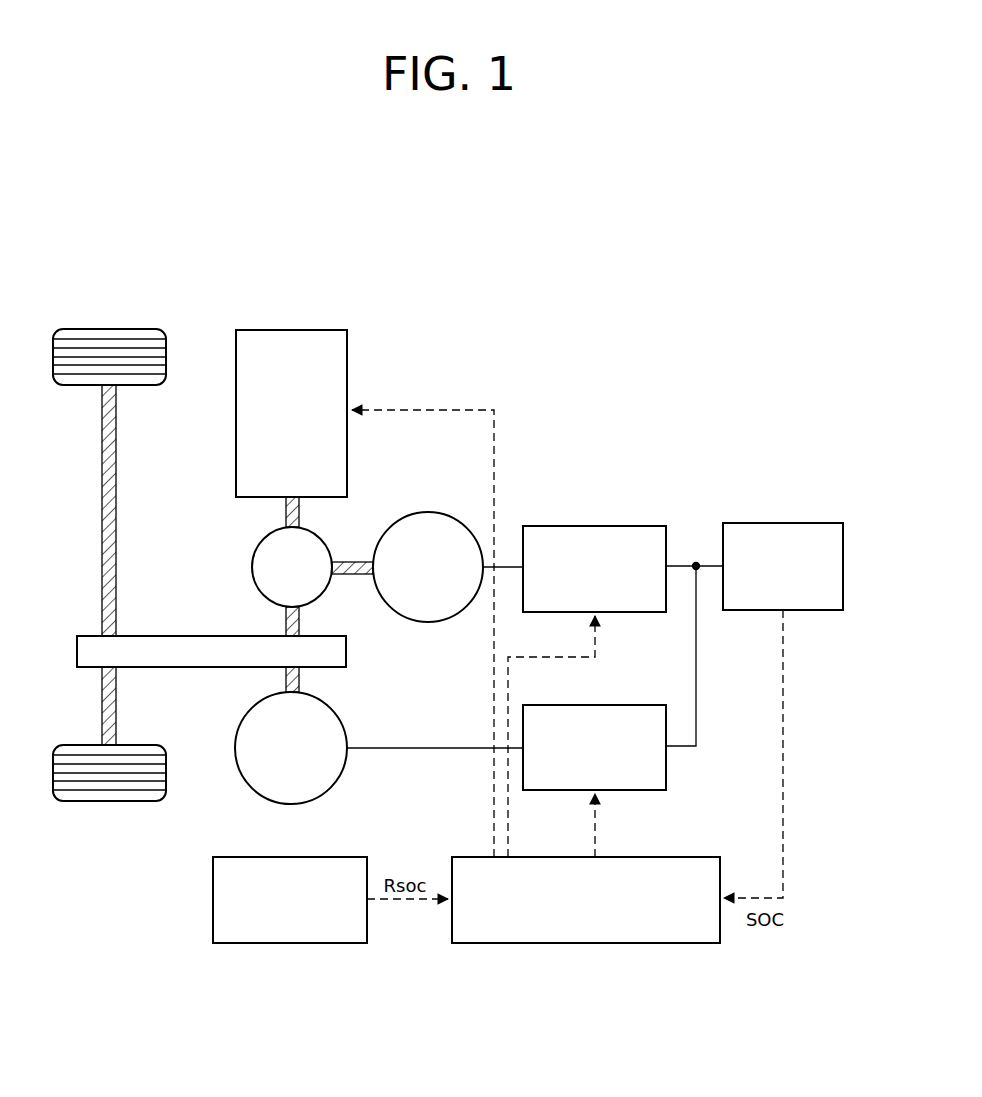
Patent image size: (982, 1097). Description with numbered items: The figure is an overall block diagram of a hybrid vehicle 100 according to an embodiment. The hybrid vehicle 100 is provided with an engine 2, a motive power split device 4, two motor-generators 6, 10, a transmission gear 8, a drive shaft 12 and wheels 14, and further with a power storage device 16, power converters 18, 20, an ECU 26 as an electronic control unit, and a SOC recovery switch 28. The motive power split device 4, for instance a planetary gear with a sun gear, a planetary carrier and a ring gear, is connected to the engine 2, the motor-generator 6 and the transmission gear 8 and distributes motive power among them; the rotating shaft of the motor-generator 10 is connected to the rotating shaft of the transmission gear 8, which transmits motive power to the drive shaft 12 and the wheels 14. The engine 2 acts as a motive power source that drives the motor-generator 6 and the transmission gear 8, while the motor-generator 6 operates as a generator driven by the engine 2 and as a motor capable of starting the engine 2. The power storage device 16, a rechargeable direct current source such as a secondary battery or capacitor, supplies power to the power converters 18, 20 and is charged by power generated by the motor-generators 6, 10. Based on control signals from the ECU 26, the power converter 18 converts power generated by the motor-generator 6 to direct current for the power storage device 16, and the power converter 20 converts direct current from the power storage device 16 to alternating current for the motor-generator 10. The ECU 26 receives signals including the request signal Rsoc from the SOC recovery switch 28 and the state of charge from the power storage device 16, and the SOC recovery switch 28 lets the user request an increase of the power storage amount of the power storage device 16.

The hybrid vehicle 100 is at (190, 270).
The engine 2 is at (325, 330).
The motive power split device 4 is at (252, 558).
The motor-generator 6 is at (431, 512).
The transmission gear 8 is at (192, 636).
The motor-generator 10 is at (335, 708).
The drive shaft 12 is at (117, 471).
The wheels 14 is at (129, 328).
The power storage device 16 is at (775, 523).
The power converter 18 is at (605, 526).
The power converter 20 is at (628, 705).
The ECU 26 is at (688, 857).
The SOC recovery switch 28 is at (321, 857).